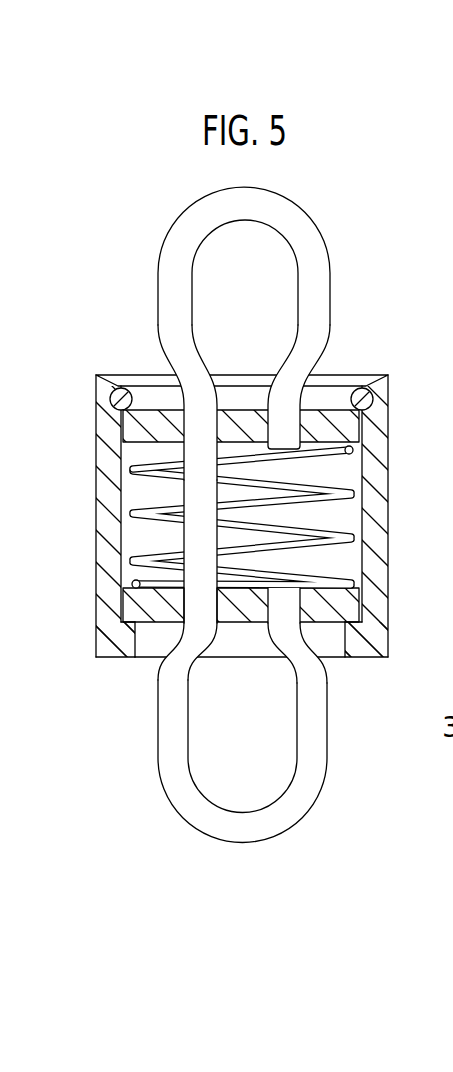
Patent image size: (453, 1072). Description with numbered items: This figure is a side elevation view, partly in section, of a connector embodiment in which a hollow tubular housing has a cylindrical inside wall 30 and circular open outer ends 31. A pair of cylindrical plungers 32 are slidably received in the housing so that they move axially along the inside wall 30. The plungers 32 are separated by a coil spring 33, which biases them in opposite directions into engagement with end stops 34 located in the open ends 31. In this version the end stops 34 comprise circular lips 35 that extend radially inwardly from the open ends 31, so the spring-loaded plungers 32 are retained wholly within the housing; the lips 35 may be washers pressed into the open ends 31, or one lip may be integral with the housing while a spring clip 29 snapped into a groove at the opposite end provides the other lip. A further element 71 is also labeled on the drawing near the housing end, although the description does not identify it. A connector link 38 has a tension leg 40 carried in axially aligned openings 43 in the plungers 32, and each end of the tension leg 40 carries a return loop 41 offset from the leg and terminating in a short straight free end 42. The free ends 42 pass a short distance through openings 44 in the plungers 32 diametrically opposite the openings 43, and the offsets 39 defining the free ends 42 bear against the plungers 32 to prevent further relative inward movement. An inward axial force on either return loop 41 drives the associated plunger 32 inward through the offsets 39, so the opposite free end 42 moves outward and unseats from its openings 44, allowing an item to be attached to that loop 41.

The spring clip 29 is at (337, 398).
The cylindrical inside wall 30 is at (123, 508).
The open outer ends 31 is at (333, 632).
The cylindrical plungers 32 is at (155, 602).
The coil spring 33 is at (262, 528).
The end stops 34 is at (120, 648).
The circular lips 35 is at (142, 637).
The connector link 38 is at (190, 451).
The connecting link offsets 39 is at (306, 632).
The tension leg 40 is at (195, 541).
The return loop 41 is at (323, 323).
The free ends 42 is at (283, 432).
The openings 43 is at (302, 608).
The openings 44 is at (190, 423).
The sealing ring 71 is at (128, 390).